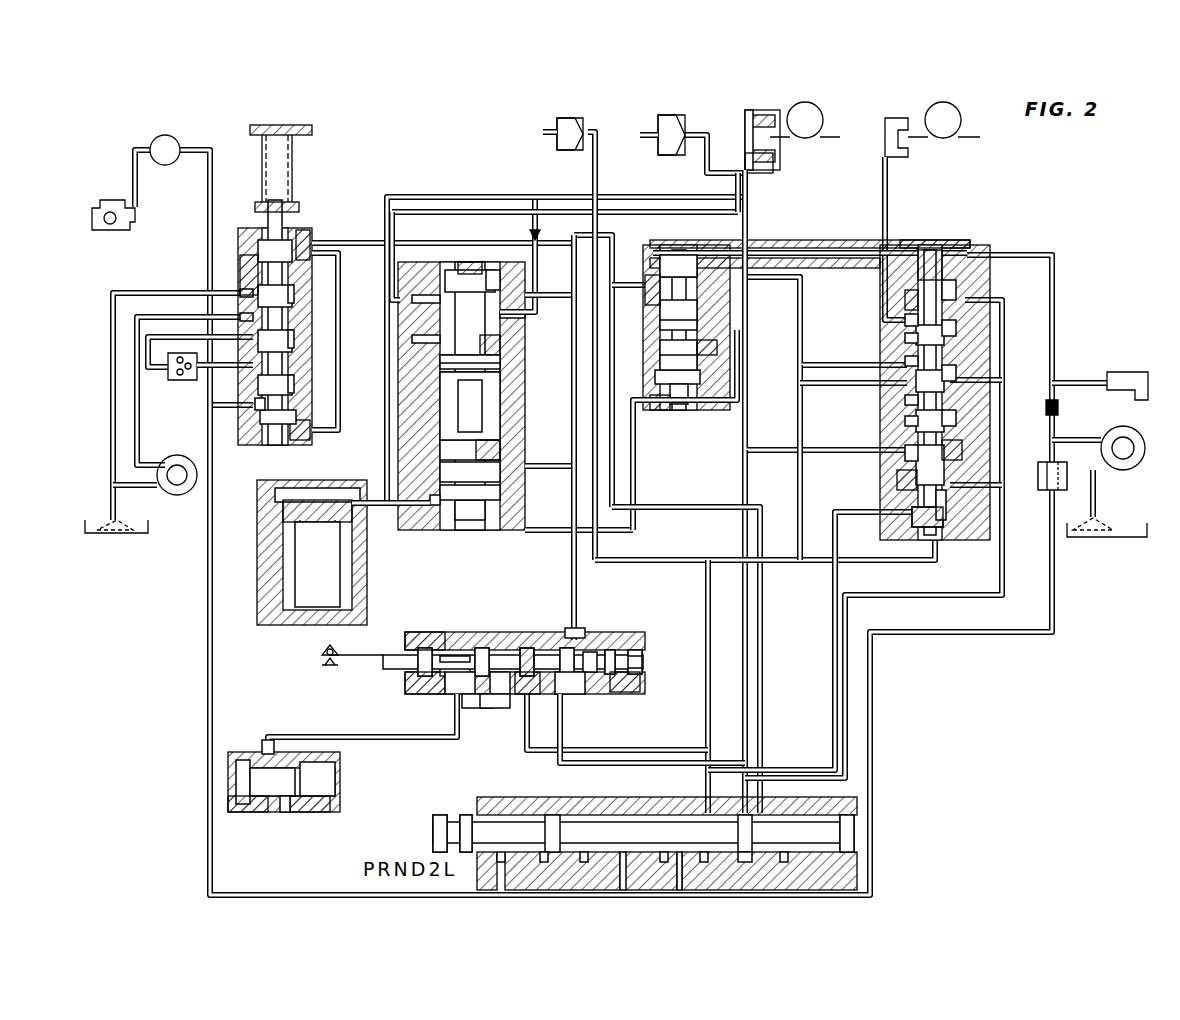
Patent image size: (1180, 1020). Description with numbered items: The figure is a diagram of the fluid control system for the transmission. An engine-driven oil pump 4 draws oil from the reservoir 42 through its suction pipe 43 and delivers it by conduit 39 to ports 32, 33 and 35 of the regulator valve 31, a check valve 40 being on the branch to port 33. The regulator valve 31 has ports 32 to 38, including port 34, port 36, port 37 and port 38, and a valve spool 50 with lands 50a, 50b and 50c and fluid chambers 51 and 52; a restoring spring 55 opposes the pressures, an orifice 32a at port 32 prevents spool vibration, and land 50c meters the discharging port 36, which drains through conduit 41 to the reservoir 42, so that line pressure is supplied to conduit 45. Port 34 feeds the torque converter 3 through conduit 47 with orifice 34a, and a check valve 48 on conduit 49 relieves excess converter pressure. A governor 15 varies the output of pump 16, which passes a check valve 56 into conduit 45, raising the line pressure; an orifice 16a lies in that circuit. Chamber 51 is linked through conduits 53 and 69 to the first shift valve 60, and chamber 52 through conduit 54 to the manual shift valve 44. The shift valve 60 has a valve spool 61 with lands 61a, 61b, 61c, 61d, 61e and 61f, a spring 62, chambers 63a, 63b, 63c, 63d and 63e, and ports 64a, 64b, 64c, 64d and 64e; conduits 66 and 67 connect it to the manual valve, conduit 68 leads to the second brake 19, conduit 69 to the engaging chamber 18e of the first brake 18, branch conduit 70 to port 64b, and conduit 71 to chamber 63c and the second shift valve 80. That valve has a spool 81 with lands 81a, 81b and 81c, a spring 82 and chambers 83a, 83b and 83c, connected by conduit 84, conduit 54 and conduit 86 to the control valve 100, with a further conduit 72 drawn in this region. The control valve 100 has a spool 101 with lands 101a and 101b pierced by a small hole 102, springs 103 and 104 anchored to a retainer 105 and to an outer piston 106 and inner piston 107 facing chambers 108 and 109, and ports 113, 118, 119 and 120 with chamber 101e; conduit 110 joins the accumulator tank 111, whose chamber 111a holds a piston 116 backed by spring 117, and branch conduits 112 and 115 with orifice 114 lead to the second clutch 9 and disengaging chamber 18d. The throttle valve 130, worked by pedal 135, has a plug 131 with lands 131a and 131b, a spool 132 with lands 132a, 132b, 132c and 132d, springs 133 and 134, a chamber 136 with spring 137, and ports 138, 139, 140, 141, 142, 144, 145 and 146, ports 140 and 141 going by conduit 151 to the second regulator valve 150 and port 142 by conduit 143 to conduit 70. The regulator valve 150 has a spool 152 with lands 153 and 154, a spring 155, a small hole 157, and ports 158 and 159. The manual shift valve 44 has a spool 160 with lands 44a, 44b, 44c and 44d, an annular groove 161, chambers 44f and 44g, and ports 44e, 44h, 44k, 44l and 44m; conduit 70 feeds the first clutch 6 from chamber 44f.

The torque converter 3 is at (172, 135).
The oil pump 4 is at (177, 496).
The first clutch 6 is at (572, 118).
The second clutch 9 is at (670, 115).
The governor 15 is at (1125, 372).
The pump 16 is at (1145, 450).
The orifice 16a is at (1050, 402).
The first brake 18 is at (765, 110).
The disengaging chamber 18d is at (774, 163).
The engaging chamber 18e is at (748, 135).
The second brake 19 is at (940, 106).
The regulator valve 31 is at (282, 125).
The port 32 is at (250, 445).
The orifice 32a is at (255, 407).
The port 33 is at (213, 405).
The port 34 is at (240, 317).
The orifice 34a is at (240, 337).
The port 35 is at (240, 292).
The discharging port 36 is at (244, 285).
The port 37 is at (302, 238).
The port 38 is at (300, 435).
The conduit 39 is at (135, 448).
The check valve 40 is at (175, 380).
The conduit 41 is at (113, 303).
The reservoir 42 is at (1135, 540).
The suction pipe 43 is at (128, 488).
The manual shift valve 44 is at (432, 828).
The land 44a is at (855, 830).
The land 44b is at (745, 862).
The land 44c is at (664, 862).
The land 44d is at (544, 862).
The port 44e is at (705, 862).
The chamber 44f is at (584, 862).
The chamber 44g is at (796, 795).
The port 44h is at (785, 862).
The port 44k is at (625, 862).
The port 44l is at (680, 890).
The port 44m is at (500, 862).
The conduit 45 is at (207, 612).
The conduit 47 is at (212, 192).
The check valve 48 is at (113, 204).
The conduit 49 is at (133, 168).
The valve spool 50 is at (262, 230).
The land 50a is at (295, 385).
The land 50b is at (295, 338).
The land 50c is at (295, 292).
The fluid chamber 51 is at (280, 445).
The fluid chamber 52 is at (258, 250).
The conduit 53 is at (413, 215).
The conduit 54 is at (415, 230).
The restoring spring 55 is at (293, 158).
The check valve 56 is at (1038, 475).
The first shift valve 60 is at (980, 243).
The valve spool 61 is at (944, 390).
The land 61a is at (946, 418).
The land 61b is at (946, 372).
The land 61c is at (946, 328).
The land 61d is at (905, 455).
The land 61e is at (944, 510).
The land 61f is at (944, 288).
The spring 62 is at (935, 250).
The chamber 63a is at (925, 530).
The chamber 63b is at (900, 480).
The chamber 63c is at (950, 450).
The chamber 63d is at (905, 298).
The chamber 63e is at (900, 240).
The port 64a is at (905, 421).
The port 64b is at (905, 400).
The port 64c is at (905, 358).
The port 64d is at (905, 336).
The port 64e is at (905, 318).
The conduit 66 is at (945, 596).
The conduit 67 is at (867, 651).
The conduit 68 is at (885, 180).
The conduit 69 is at (803, 312).
The conduit 70 is at (706, 590).
The conduit 71 is at (770, 448).
The line 72 is at (571, 548).
The second shift valve 80 is at (770, 240).
The valve spool 81 is at (697, 297).
The land 81a is at (697, 368).
The land 81b is at (660, 330).
The land 81c is at (680, 255).
The spring 82 is at (688, 402).
The chamber 83a is at (662, 410).
The chamber 83b is at (705, 350).
The chamber 83c is at (652, 288).
The conduit 84 is at (748, 490).
The conduit 86 is at (573, 275).
The control valve 100 is at (470, 255).
The valve spool 101 is at (455, 310).
The land 101a is at (440, 378).
The land 101b is at (468, 262).
The chamber 101e is at (412, 262).
The small hole 102 is at (400, 225).
The compression spring 103 is at (500, 395).
The compression spring 104 is at (482, 410).
The retainer 105 is at (496, 350).
The outer annular piston 106 is at (500, 450).
The inner piston 107 is at (485, 515).
The chamber 108 is at (500, 470).
The chamber 109 is at (455, 510).
The conduit 110 is at (432, 505).
The accumulator tank 111 is at (350, 482).
The chamber 111a is at (283, 512).
The branch conduit 112 is at (558, 210).
The port 113 is at (515, 320).
The orifice 114 is at (533, 228).
The branch conduit 115 is at (530, 312).
The piston 116 is at (350, 524).
The spring 117 is at (345, 575).
The port 118 is at (492, 270).
The port 119 is at (500, 365).
The port 120 is at (412, 343).
The throttle valve 130 is at (405, 632).
The plug 131 is at (430, 648).
The land 131a is at (420, 632).
The land 131b is at (482, 648).
The valve spool 132 is at (642, 662).
The land 132a is at (530, 694).
The land 132b is at (568, 648).
The land 132c is at (612, 650).
The land 132d is at (527, 648).
The spring 133 is at (472, 704).
The spring 134 is at (458, 648).
The pedal 135 is at (322, 652).
The chamber 136 is at (642, 672).
The spring 137 is at (642, 652).
The port 138 is at (592, 650).
The port 139 is at (572, 630).
The port 140 is at (452, 694).
The port 141 is at (496, 708).
The port 142 is at (568, 694).
The conduit 143 is at (565, 740).
The port 144 is at (415, 694).
The port 145 is at (500, 694).
The port 146 is at (622, 692).
The second regulator valve 150 is at (225, 832).
The conduit 151 is at (456, 742).
The spool 152 is at (238, 770).
The land 153 is at (250, 780).
The land 154 is at (305, 808).
The spring 155 is at (335, 770).
The small hole 157 is at (245, 808).
The port 158 is at (270, 752).
The port 159 is at (285, 812).
The valve spool 160 is at (466, 815).
The annular groove 161 is at (440, 815).